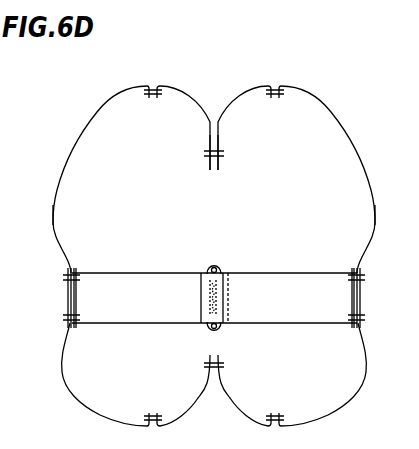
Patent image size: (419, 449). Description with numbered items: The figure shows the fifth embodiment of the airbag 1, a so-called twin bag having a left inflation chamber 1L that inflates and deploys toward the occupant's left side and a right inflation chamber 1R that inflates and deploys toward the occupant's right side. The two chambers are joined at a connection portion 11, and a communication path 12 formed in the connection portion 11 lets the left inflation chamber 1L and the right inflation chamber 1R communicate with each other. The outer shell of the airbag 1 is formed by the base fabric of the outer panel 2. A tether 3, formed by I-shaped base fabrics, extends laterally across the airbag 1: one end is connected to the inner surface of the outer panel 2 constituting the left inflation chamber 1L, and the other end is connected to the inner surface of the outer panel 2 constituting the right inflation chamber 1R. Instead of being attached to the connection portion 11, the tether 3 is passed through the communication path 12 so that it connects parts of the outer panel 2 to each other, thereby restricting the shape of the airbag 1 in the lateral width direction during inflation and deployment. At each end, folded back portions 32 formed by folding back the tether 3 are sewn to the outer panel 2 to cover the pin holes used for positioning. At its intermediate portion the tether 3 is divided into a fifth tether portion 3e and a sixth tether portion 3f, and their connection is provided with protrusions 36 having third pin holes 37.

The airbag 1 is at (341, 88).
The left inflation chamber 1L is at (147, 155).
The right inflation chamber 1R is at (300, 154).
The connection portion 11 is at (209, 165).
The communication path 12 is at (222, 193).
The outer panel 2 is at (53, 215).
The tether 3 is at (153, 267).
The folded back portion 32 is at (68, 297).
The protrusion 36 is at (214, 262).
The third pin hole 37 is at (208, 329).
The fifth tether portion 3e is at (140, 324).
The sixth tether portion 3f is at (286, 324).